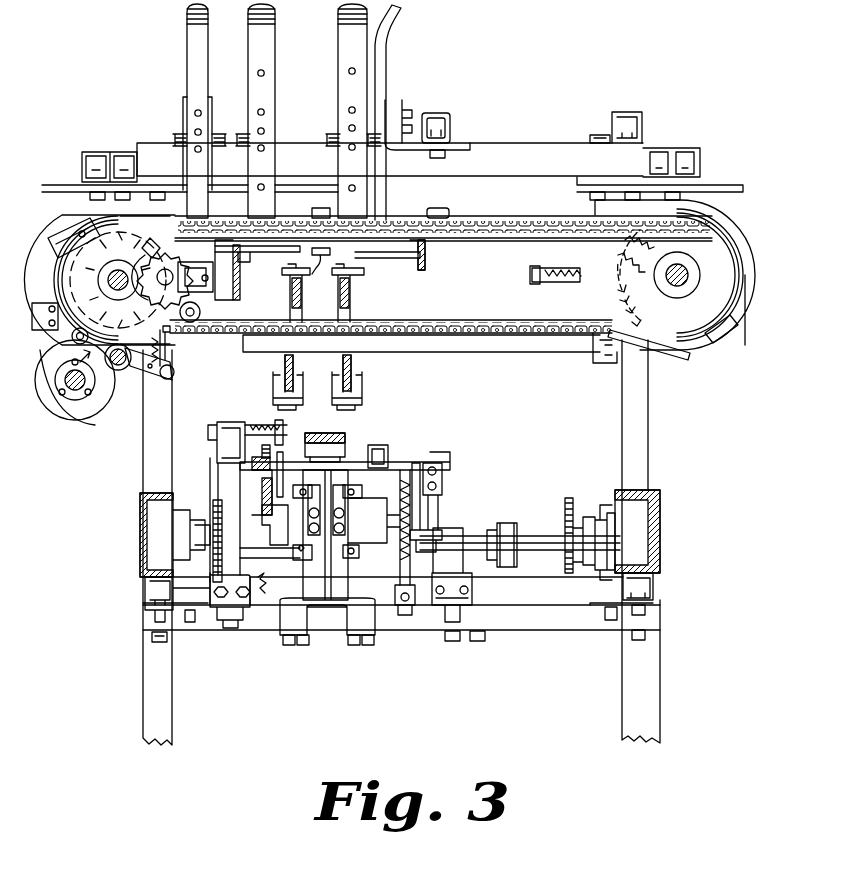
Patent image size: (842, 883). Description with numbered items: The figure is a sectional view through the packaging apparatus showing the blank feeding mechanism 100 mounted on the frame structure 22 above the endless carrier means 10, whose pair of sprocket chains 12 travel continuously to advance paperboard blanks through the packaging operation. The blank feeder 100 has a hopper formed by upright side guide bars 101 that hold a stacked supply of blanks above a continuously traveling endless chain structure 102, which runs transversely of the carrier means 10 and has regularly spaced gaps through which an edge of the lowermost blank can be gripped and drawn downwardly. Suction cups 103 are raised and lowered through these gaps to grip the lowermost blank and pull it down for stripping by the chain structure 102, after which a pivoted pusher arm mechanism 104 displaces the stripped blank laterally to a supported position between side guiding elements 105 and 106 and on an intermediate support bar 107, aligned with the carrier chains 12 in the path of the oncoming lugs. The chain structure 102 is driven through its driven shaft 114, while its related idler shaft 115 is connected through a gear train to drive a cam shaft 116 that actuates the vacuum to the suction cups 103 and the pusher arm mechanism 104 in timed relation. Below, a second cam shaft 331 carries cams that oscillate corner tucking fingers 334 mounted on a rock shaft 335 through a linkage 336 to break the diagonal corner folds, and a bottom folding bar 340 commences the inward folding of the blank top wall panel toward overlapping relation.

The blank feeding mechanism 100 is at (178, 49).
The upright side guide bars 101 is at (192, 78).
The endless chain structure 102 is at (488, 216).
The suction cups 103 is at (176, 220).
The pivoted pusher arm mechanism 104 is at (68, 222).
The side guiding element 105 is at (242, 251).
The side guiding element 106 is at (430, 270).
The intermediate support bar 107 is at (320, 278).
The sprocket chains 12 is at (358, 268).
The endless carrier means 10 is at (372, 286).
The driven shaft 114 is at (688, 278).
The idler shaft 115 is at (112, 282).
The cam shaft 116 is at (78, 392).
The frame structure 22 is at (133, 687).
The cam shaft 331 is at (534, 536).
The corner tucking fingers 334 is at (371, 446).
The rock shaft 335 is at (212, 470).
The linkage 336 is at (444, 480).
The bottom folding bar 340 is at (452, 460).